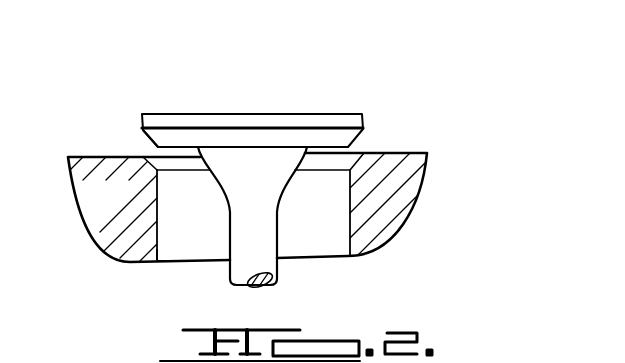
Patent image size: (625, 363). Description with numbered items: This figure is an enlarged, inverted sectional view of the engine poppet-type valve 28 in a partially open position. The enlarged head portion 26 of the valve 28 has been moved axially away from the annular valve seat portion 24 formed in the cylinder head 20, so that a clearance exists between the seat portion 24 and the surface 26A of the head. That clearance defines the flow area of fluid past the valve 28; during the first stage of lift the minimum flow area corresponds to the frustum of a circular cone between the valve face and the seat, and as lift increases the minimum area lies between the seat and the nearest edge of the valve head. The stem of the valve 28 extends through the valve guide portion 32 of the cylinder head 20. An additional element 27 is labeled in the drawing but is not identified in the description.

The cylinder head 20 is at (393, 210).
The valve seat portion 24 is at (354, 158).
The head portion 26 is at (252, 113).
The surface 26A is at (148, 138).
The bore exit edge 27 is at (155, 251).
The poppet-type valve 28 is at (251, 224).
The valve guide portion 32 is at (275, 274).